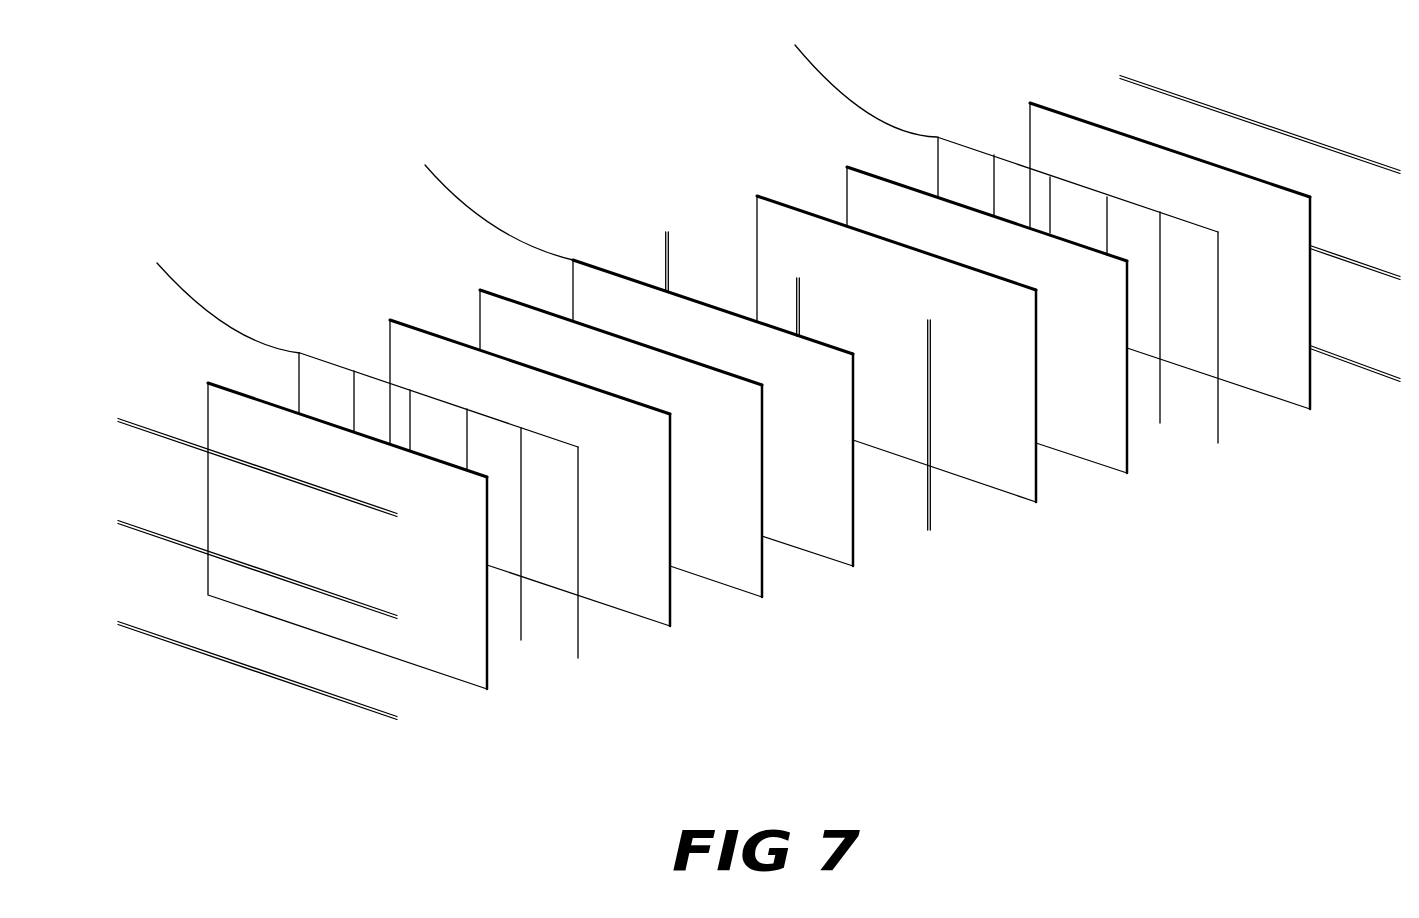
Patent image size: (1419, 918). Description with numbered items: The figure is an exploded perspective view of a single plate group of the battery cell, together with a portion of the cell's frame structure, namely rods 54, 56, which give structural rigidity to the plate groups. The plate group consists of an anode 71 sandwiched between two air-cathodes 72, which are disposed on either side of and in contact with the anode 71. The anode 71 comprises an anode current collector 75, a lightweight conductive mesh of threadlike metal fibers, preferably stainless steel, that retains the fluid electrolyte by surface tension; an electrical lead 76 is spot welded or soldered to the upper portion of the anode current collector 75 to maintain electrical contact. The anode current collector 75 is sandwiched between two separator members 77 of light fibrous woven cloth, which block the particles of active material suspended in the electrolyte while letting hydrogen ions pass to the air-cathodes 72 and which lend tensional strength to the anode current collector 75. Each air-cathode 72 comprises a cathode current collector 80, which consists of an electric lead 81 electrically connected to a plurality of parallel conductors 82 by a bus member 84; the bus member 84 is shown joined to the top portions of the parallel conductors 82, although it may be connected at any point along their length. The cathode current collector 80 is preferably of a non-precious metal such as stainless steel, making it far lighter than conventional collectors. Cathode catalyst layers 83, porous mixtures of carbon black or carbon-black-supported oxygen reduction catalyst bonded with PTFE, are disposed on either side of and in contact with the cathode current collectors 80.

The rod 54 is at (377, 718).
The rod 56 is at (932, 495).
The anode 71 is at (812, 417).
The air-cathode 72 is at (801, 419).
The anode current collector 75 is at (750, 425).
The electrical lead 76 is at (512, 233).
The separator member 77 is at (753, 570).
The cathode current collector 80 is at (693, 269).
The electric lead 81 is at (172, 282).
The parallel conductor 82 is at (580, 635).
The cathode catalyst layer 83 is at (758, 651).
The bus member 84 is at (347, 367).